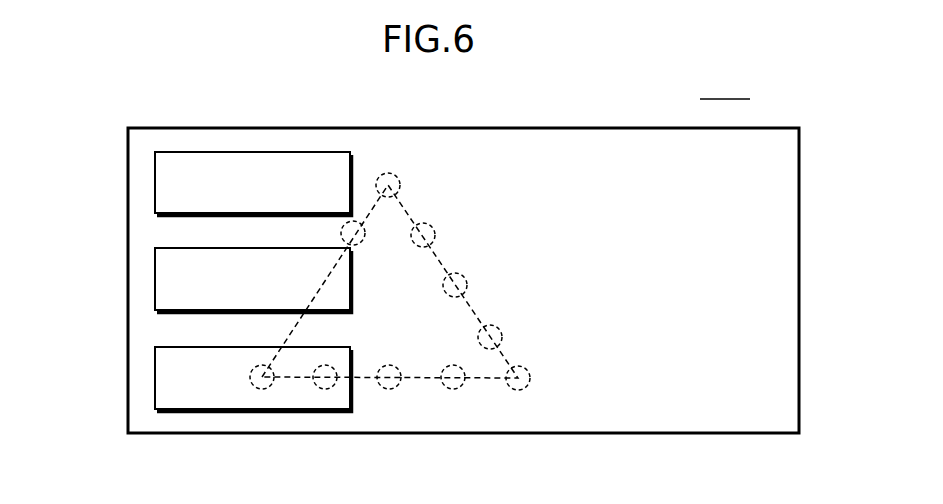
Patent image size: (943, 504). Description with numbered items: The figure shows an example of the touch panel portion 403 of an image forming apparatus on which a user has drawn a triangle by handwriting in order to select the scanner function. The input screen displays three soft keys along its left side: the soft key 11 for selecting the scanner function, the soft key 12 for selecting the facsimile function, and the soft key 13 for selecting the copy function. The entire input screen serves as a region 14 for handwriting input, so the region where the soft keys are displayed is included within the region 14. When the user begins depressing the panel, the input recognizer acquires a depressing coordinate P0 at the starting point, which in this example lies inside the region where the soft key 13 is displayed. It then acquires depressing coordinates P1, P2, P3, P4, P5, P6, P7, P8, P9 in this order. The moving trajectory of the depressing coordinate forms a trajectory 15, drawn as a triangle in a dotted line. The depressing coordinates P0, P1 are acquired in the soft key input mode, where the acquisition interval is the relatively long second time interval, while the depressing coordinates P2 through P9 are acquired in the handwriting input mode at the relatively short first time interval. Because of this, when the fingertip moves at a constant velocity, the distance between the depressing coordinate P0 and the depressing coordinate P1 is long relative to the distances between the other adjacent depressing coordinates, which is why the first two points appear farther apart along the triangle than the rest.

The soft key 11 is at (155, 182).
The soft key 12 is at (155, 280).
The soft key 13 is at (155, 377).
The region for handwriting input 14 is at (508, 127).
The trajectory 15 is at (404, 210).
The touch panel portion 403 is at (725, 85).
The depressing coordinate P0 is at (262, 389).
The depressing coordinate P1 is at (362, 244).
The depressing coordinate P2 is at (396, 176).
The depressing coordinate P3 is at (436, 235).
The depressing coordinate P4 is at (468, 286).
The depressing coordinate P5 is at (502, 333).
The depressing coordinate P6 is at (530, 372).
The depressing coordinate P7 is at (453, 389).
The depressing coordinate P8 is at (389, 389).
The depressing coordinate P9 is at (325, 389).